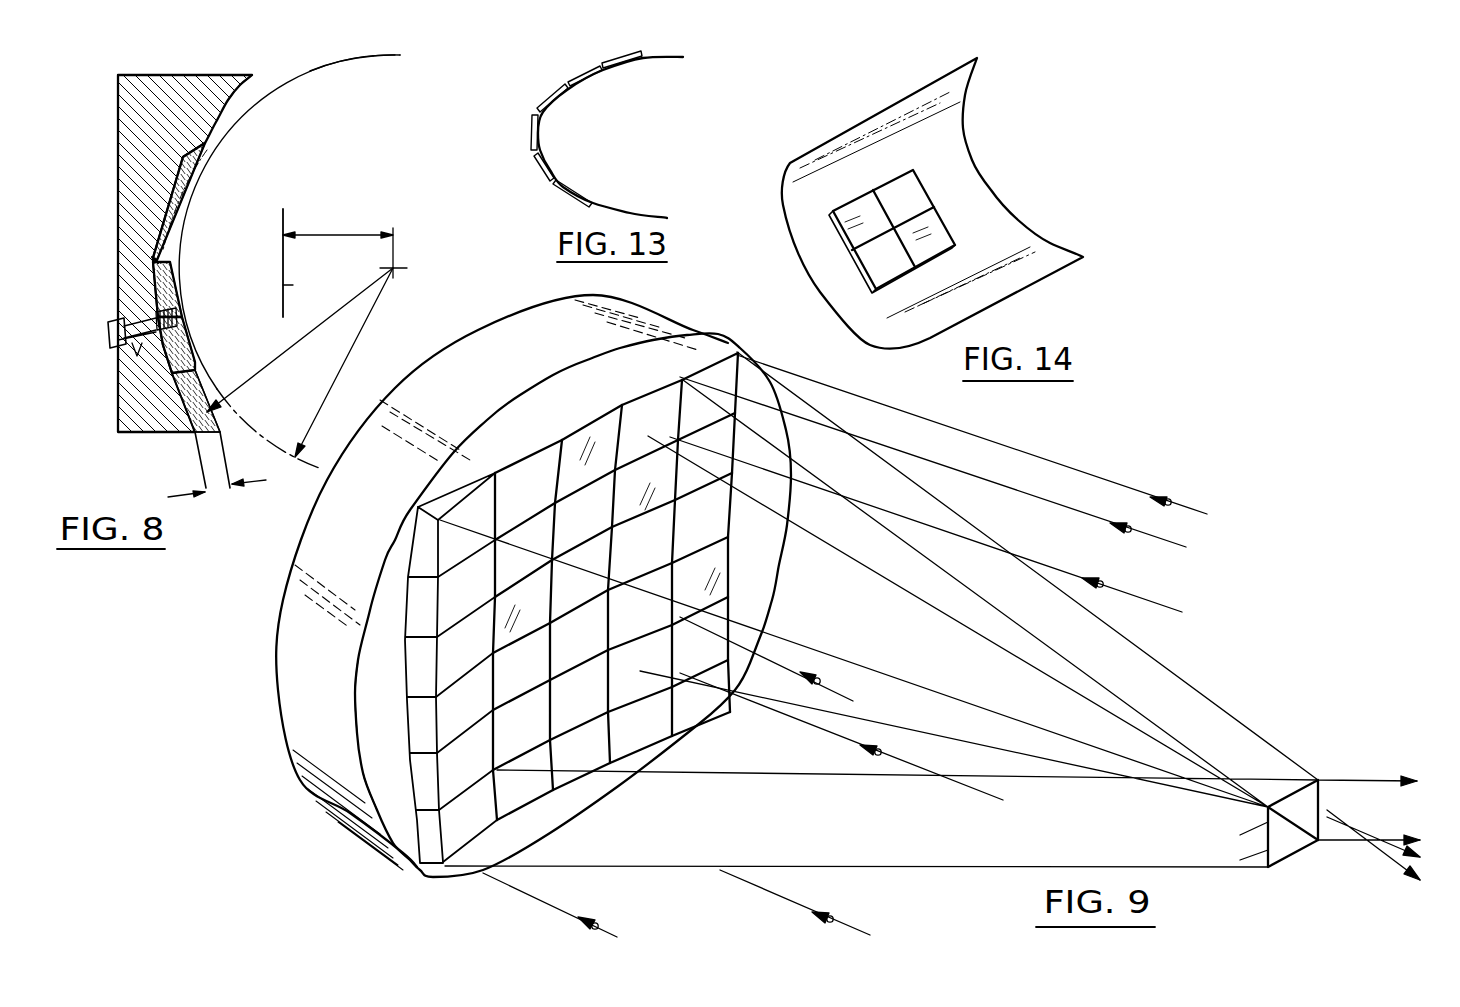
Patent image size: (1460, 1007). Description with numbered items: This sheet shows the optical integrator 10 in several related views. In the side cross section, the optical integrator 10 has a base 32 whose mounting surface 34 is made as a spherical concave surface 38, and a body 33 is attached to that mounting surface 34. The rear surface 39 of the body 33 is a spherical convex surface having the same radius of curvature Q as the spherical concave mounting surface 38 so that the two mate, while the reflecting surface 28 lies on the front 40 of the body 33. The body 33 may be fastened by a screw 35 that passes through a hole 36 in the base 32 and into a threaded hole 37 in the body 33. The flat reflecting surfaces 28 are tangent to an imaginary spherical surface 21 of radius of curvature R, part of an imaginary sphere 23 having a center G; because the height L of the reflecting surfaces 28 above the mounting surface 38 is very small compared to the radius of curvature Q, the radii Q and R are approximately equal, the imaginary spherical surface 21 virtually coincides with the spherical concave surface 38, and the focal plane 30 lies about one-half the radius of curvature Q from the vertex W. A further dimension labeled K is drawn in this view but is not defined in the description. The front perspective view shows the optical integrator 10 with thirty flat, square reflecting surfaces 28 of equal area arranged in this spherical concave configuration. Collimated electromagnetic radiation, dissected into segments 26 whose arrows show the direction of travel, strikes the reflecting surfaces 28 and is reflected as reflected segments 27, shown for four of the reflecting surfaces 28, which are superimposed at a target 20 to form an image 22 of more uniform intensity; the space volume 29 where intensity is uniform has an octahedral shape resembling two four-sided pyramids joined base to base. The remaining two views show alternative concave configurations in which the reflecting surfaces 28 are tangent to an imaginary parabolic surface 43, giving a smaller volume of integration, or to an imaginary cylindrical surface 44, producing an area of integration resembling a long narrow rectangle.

In FIG. 8, the optical integrator 10 is at (104, 211).
In FIG. 9, the optical integrator 10 is at (283, 753).
In FIG. 9, the target 20 is at (1290, 848).
In FIG. 8, the imaginary spherical surface 21 is at (273, 91).
In FIG. 8, the image 22 is at (293, 285).
In FIG. 8, the imaginary sphere 23 is at (343, 62).
In FIG. 9, the segments of electromagnetic radiation 26 is at (1057, 465).
In FIG. 9, the reflected segments of electromagnetic radiation 27 is at (810, 648).
In FIG. 8, the reflecting surfaces 28 is at (205, 168).
In FIG. 13, the reflecting surfaces 28 is at (587, 80).
In FIG. 14, the reflecting surfaces 28 is at (903, 195).
In FIG. 9, the reflecting surfaces 28 is at (660, 403).
In FIG. 9, the space volume 29 is at (1247, 857).
In FIG. 8, the focal plane 30 is at (285, 220).
In FIG. 8, the base 32 is at (118, 152).
In FIG. 9, the base 32 is at (297, 667).
In FIG. 8, the body 33 is at (178, 143).
In FIG. 9, the body 33 is at (715, 352).
In FIG. 8, the mounting surface 34 is at (158, 195).
In FIG. 9, the mounting surface 34 is at (370, 727).
In FIG. 8, the screw 35 is at (108, 333).
In FIG. 8, the hole 36 is at (138, 359).
In FIG. 8, the threaded hole 37 is at (177, 312).
In FIG. 8, the spherical concave surface 38 is at (230, 92).
In FIG. 9, the spherical concave surface 38 is at (380, 770).
In FIG. 8, the rear surface 39 is at (153, 258).
In FIG. 9, the rear surface 39 is at (400, 580).
In FIG. 8, the front 40 is at (195, 343).
In FIG. 13, the imaginary parabolic surface 43 is at (667, 60).
In FIG. 14, the imaginary cylindrical surface 44 is at (987, 225).
In FIG. 8, the center of the imaginary sphere G is at (397, 264).
In FIG. 8, the offset distance K is at (338, 250).
In FIG. 8, the height of the reflecting surfaces L is at (217, 489).
In FIG. 8, the radius of curvature of the mounting surface Q is at (276, 366).
In FIG. 8, the radius of curvature of the imaginary spherical surface R is at (346, 369).
In FIG. 8, the vertex W is at (153, 262).